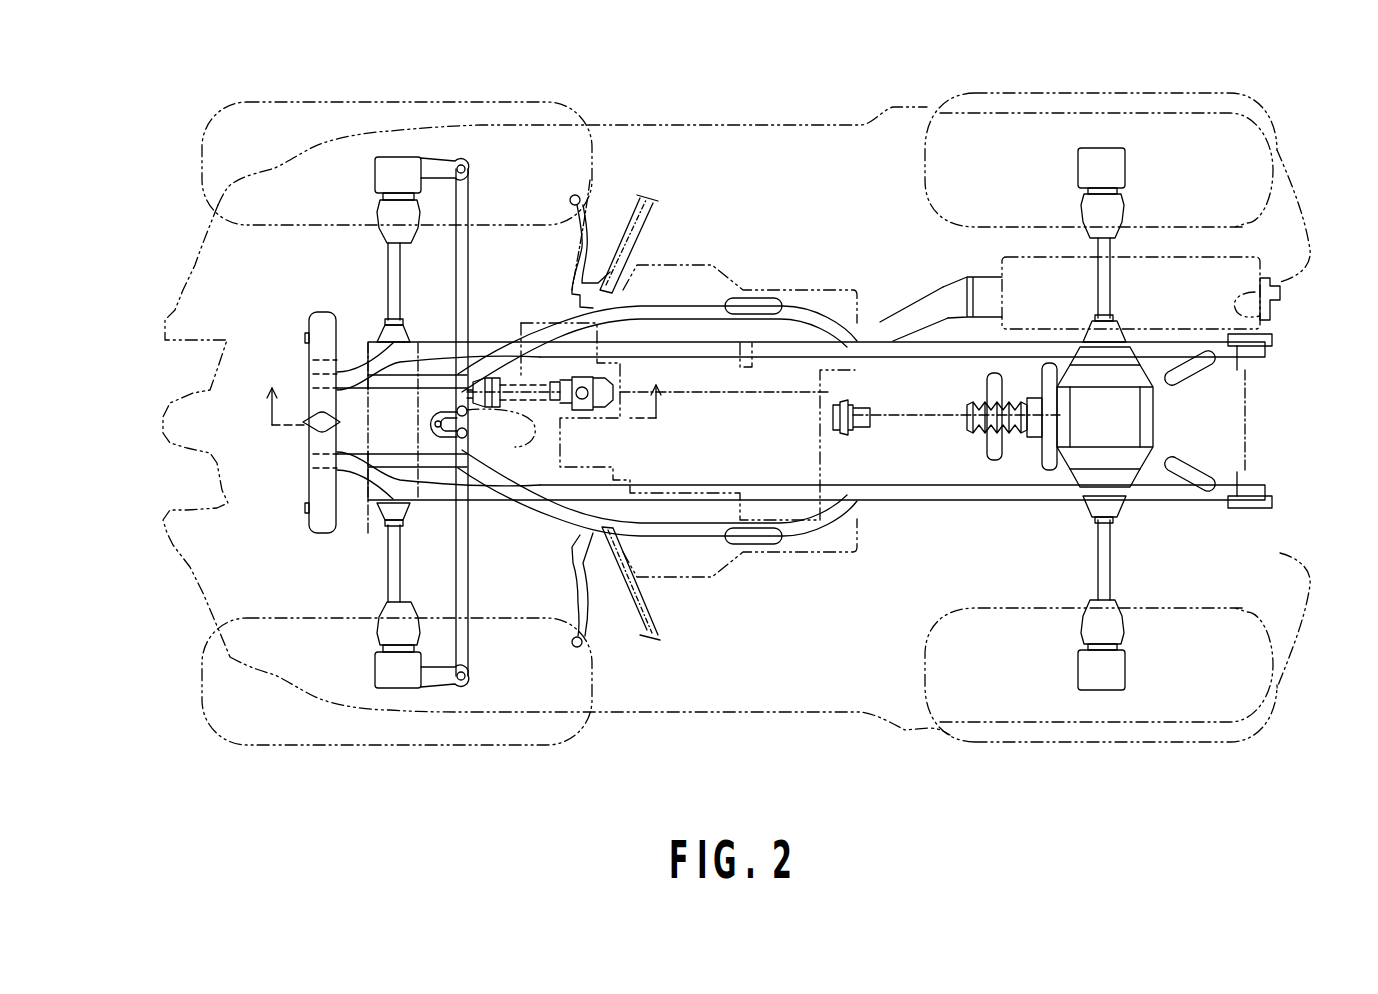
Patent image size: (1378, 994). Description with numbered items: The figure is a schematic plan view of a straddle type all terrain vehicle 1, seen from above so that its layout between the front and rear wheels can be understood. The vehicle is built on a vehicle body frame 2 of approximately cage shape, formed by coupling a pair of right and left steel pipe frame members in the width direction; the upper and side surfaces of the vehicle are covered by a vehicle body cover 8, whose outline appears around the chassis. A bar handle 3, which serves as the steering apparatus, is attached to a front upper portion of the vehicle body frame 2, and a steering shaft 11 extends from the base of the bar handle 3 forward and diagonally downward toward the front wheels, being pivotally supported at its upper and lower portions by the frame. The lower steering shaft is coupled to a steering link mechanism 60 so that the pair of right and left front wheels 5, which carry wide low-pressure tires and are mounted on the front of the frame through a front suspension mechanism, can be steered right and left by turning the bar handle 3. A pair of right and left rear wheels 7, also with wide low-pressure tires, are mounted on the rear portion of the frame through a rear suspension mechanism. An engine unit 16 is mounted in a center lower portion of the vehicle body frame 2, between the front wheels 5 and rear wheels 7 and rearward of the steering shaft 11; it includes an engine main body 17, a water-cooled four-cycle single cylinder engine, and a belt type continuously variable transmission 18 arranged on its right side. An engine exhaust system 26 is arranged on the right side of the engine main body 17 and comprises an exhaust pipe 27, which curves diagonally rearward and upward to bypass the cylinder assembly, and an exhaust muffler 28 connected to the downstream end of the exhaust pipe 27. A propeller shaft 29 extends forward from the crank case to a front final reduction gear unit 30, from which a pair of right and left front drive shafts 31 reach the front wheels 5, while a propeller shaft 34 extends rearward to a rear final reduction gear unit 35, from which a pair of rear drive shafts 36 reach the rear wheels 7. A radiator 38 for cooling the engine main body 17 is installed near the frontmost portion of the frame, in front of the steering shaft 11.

The all terrain vehicle 1 is at (748, 77).
The vehicle body frame 2 is at (907, 505).
The bar handle 3 is at (602, 313).
The front wheels 5 is at (205, 150).
The rear wheels 7 is at (1013, 95).
The vehicle body cover 8 is at (180, 575).
The steering shaft 11 is at (498, 437).
The engine unit 16 is at (683, 527).
The engine main body 17 is at (833, 500).
The belt type continuously variable transmission 18 is at (788, 292).
The engine exhaust system 26 is at (1274, 256).
The exhaust pipe 27 is at (490, 345).
The exhaust muffler 28 is at (1275, 311).
The propeller shaft 29 is at (512, 380).
The front final reduction gear unit 30 is at (309, 333).
The front drive shafts 31 is at (390, 275).
The propeller shaft 34 is at (877, 345).
The rear final reduction gear unit 35 is at (1157, 417).
The rear drive shafts 36 is at (1258, 488).
The radiator 38 is at (310, 360).
The steering link mechanism 60 is at (420, 433).